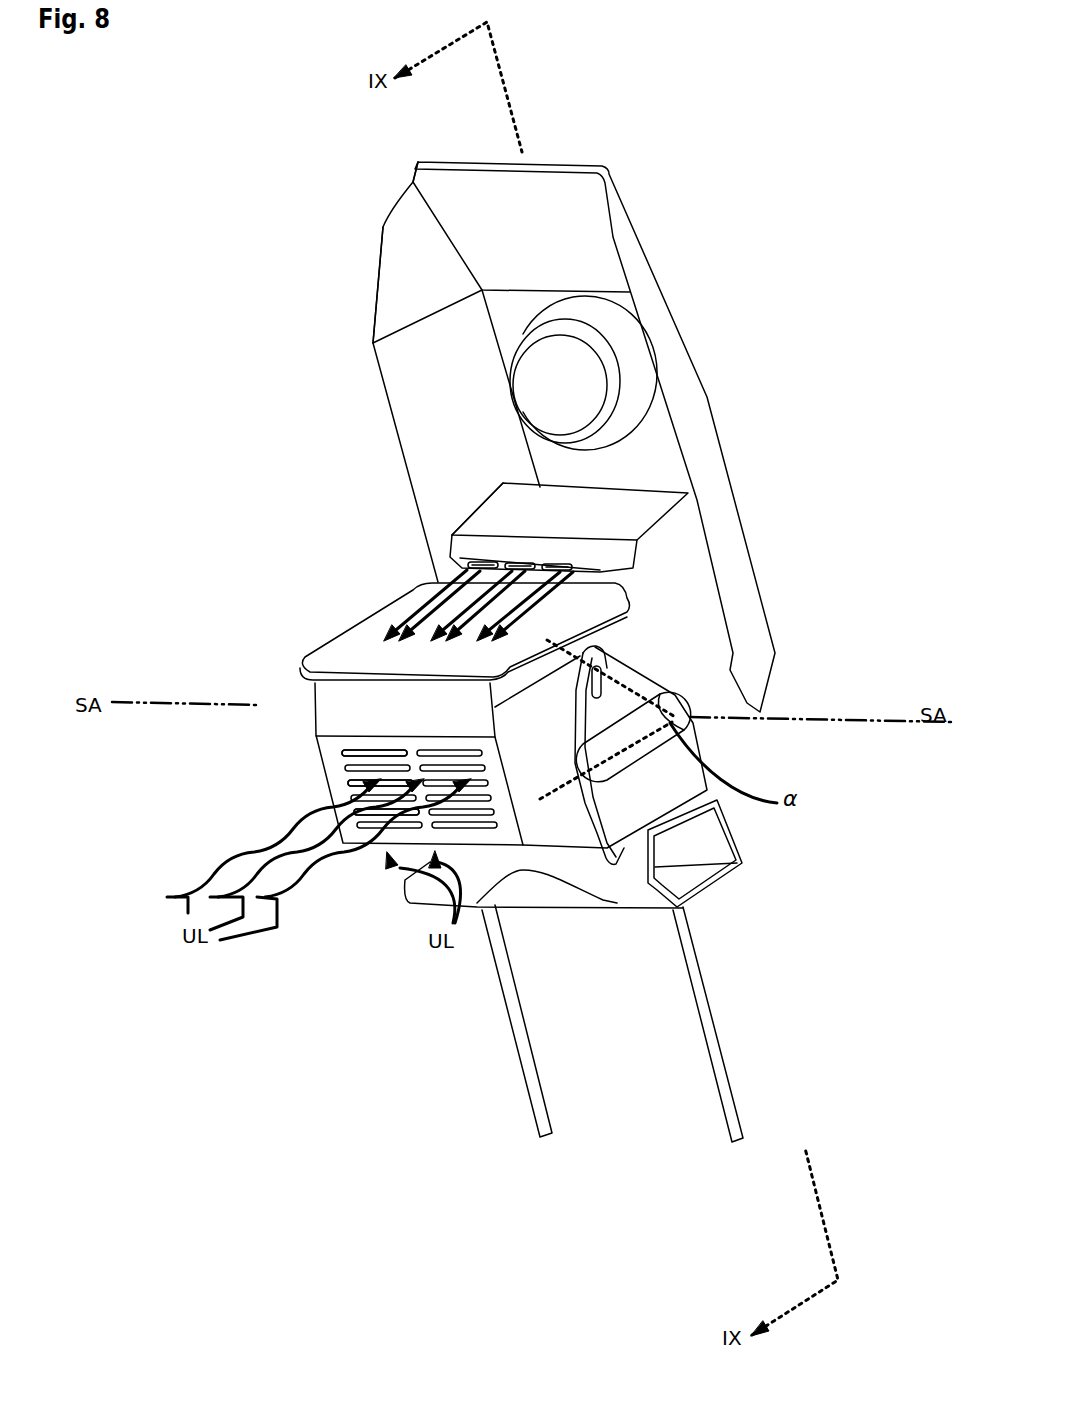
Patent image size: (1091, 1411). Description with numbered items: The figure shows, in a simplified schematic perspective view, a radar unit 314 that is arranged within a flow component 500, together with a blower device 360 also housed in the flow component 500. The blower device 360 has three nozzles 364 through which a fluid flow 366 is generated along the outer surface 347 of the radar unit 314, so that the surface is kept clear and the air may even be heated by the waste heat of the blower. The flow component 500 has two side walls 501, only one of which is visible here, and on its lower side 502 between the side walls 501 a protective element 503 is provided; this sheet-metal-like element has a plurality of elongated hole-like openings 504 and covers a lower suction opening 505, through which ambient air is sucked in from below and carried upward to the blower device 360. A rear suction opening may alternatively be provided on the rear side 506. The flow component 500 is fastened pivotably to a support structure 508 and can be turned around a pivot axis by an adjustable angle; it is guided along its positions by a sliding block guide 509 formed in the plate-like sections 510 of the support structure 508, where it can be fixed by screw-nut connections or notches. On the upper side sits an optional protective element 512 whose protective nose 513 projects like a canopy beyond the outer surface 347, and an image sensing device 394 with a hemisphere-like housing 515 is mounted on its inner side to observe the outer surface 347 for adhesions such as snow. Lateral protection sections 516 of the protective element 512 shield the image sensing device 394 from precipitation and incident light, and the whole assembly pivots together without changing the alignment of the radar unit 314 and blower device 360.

The image sensing device 394 is at (600, 330).
The hemisphere-like housing 515 is at (567, 380).
The lateral protection sections 516 is at (413, 360).
The protective element 512 is at (724, 392).
The protective nose 513 is at (510, 307).
The blower device 360 is at (476, 543).
The fluid flow 366 is at (427, 605).
The nozzles 364 is at (560, 564).
The outer surface 347 is at (357, 633).
The flow component 500 is at (690, 550).
The side walls 501 is at (687, 600).
The sliding block guide 509 is at (597, 693).
The radar unit 314 is at (336, 701).
The elongated hole-like openings 504 is at (340, 750).
The lower side 502 is at (318, 773).
The protective element 503 is at (333, 785).
The lower suction opening 505 is at (372, 838).
The plate-like section 510 is at (613, 810).
The support structure 508 is at (772, 870).
The rear side 506 is at (707, 733).